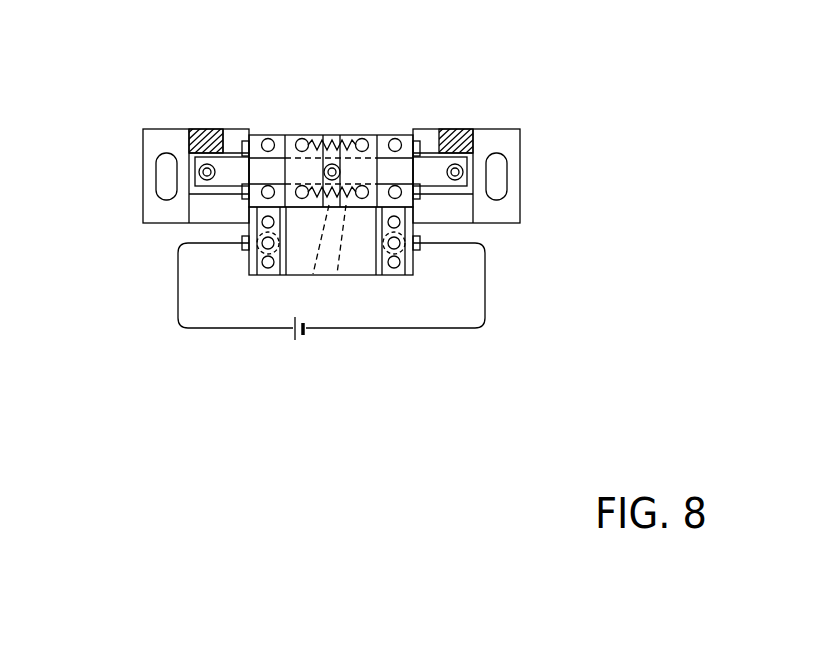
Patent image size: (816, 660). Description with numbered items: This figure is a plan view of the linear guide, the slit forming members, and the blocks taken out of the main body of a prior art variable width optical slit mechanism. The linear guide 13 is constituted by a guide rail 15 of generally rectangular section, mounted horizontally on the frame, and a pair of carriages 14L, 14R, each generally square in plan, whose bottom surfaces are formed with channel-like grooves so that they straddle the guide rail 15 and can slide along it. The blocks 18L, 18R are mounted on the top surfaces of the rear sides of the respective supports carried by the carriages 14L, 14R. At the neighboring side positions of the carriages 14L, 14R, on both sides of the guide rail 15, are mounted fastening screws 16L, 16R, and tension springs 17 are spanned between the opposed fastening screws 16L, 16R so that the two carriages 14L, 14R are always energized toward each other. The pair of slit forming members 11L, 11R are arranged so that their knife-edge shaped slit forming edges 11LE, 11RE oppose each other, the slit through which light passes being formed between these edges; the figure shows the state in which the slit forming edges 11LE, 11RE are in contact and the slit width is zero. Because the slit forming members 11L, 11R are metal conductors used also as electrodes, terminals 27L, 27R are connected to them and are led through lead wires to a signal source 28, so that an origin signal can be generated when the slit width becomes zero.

The linear guide 13 is at (470, 121).
The carriage 14L is at (243, 133).
The carriage 14R is at (372, 140).
The guide rail 15 is at (428, 160).
The fastening screw 16L is at (292, 183).
The fastening screw 16R is at (359, 184).
The tension spring 17 is at (333, 143).
The block 18L is at (250, 172).
The block 18R is at (407, 173).
The terminal 27L is at (247, 243).
The terminal 27R is at (420, 245).
The slit forming member 11L is at (297, 252).
The slit forming member 11R is at (352, 245).
The slit forming edge 11LE is at (320, 257).
The slit forming edge 11RE is at (338, 255).
The signal source 28 is at (303, 340).